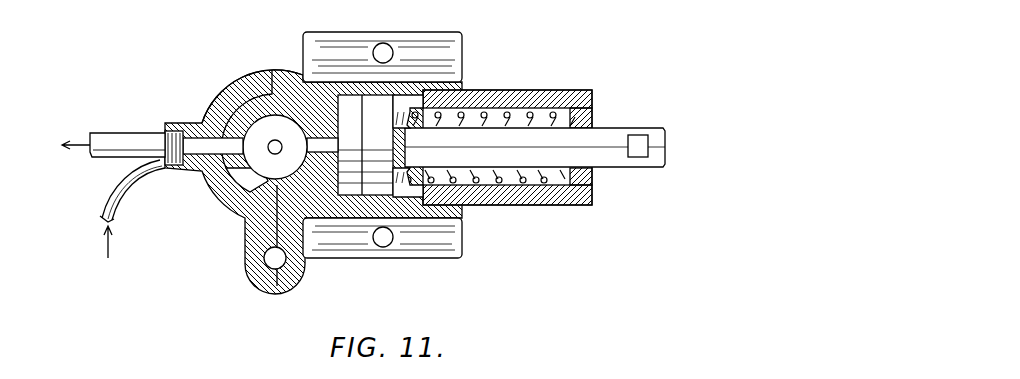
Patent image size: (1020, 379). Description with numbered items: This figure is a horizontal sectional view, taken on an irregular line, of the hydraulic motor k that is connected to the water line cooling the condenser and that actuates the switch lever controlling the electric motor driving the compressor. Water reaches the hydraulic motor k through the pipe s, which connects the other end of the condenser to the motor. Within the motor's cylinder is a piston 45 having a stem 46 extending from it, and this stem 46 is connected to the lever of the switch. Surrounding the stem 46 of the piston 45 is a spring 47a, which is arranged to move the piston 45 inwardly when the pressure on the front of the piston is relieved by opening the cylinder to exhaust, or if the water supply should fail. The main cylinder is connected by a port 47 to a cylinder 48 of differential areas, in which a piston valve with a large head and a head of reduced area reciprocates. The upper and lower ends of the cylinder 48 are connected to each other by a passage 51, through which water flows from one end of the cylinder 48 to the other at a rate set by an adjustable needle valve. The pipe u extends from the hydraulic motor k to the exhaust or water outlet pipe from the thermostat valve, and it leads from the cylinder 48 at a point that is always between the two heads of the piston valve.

The hydraulic motor k is at (266, 63).
The pipe u is at (122, 137).
The pipe s is at (103, 198).
The port 47 is at (322, 143).
The piston 45 is at (378, 103).
The spring 47a is at (507, 117).
The stem 46 is at (598, 136).
The cylinder of differential areas 48 is at (263, 160).
The passage 51 is at (273, 263).